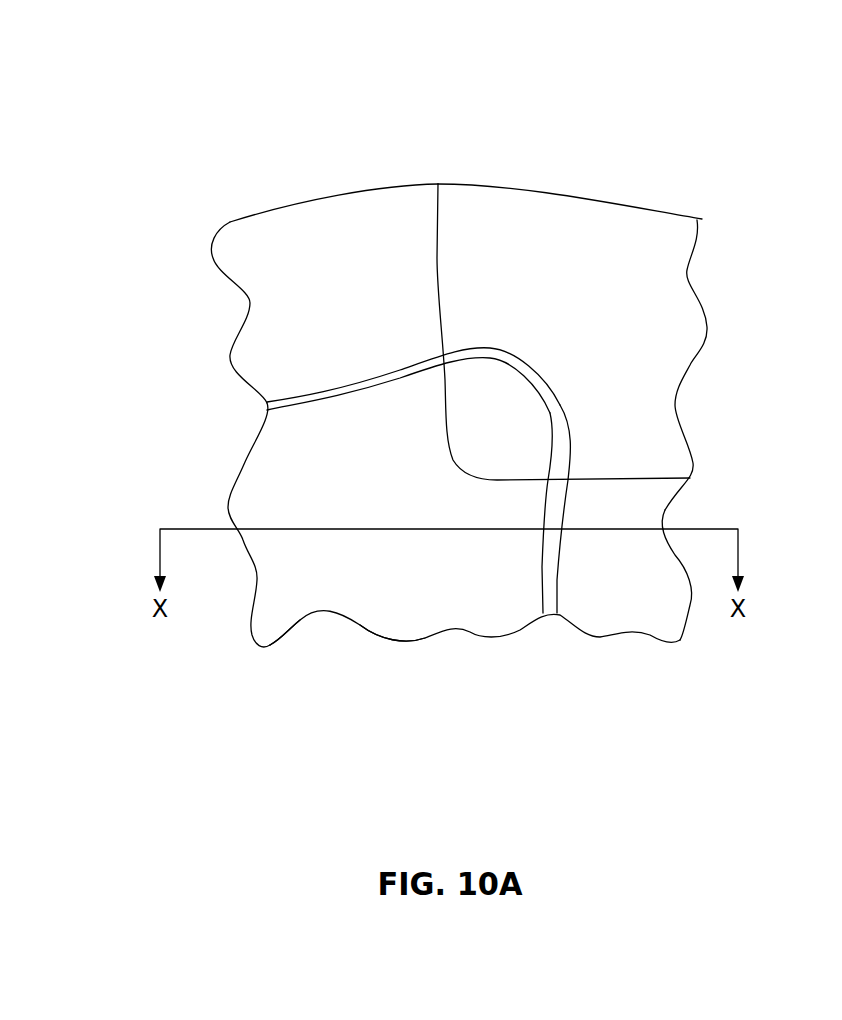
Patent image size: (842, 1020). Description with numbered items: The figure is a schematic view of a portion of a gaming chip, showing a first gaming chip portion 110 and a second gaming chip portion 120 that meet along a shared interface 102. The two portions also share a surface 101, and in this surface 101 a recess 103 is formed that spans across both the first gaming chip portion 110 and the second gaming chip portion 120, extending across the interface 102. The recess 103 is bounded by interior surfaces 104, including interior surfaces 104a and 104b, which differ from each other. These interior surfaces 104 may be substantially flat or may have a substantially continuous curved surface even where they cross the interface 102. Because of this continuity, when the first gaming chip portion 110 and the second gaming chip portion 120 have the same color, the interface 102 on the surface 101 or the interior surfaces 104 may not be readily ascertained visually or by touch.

The surface 101 is at (638, 405).
The interface 102 is at (437, 258).
The recess 103 is at (305, 553).
The interior surface 104 is at (340, 393).
The interior surface 104a is at (418, 600).
The interior surface 104b is at (548, 572).
The first gaming chip portion 110 is at (322, 248).
The second gaming chip portion 120 is at (558, 260).